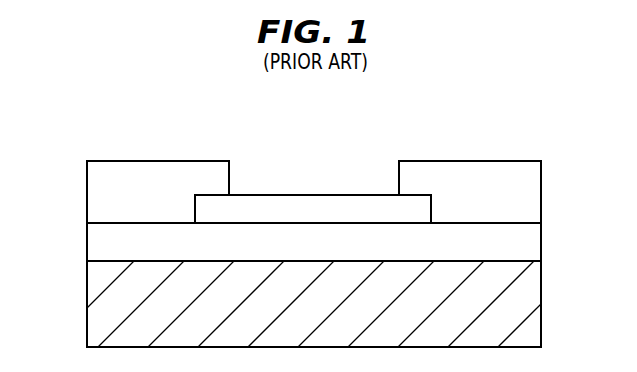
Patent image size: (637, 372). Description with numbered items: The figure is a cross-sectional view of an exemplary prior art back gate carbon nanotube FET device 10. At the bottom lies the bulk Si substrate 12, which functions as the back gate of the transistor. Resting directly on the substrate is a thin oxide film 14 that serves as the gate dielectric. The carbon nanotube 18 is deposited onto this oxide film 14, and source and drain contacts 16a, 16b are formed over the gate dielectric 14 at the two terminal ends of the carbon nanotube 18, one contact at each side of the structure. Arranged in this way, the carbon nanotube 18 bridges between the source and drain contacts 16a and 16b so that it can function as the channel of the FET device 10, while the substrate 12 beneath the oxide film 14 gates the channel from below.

The carbon nanotube FET device 10 is at (110, 130).
The bulk Si substrate 12 is at (530, 313).
The thin oxide film 14 is at (530, 241).
The source contact 16a is at (98, 188).
The drain contact 16b is at (530, 192).
The carbon nanotube 18 is at (310, 207).